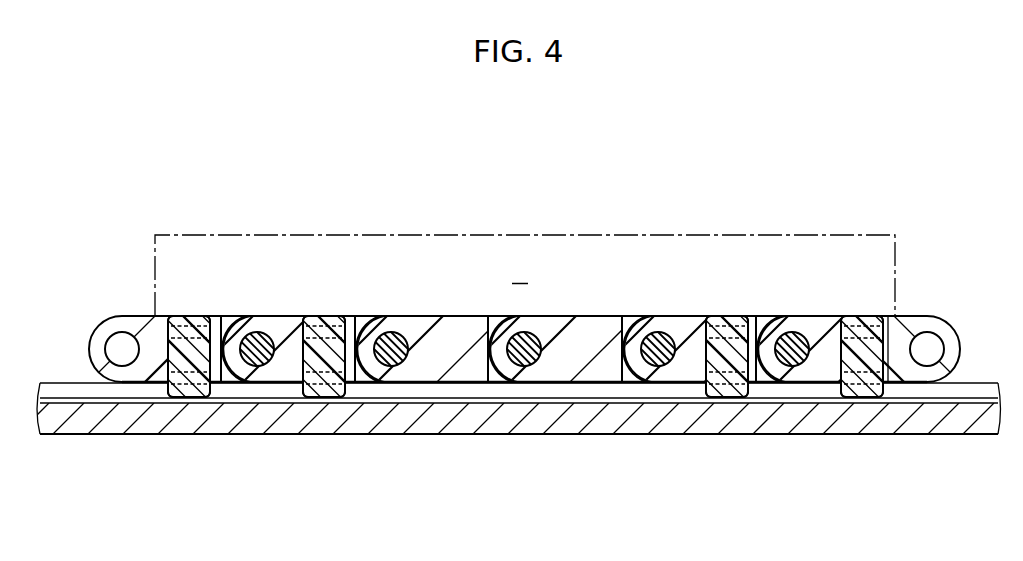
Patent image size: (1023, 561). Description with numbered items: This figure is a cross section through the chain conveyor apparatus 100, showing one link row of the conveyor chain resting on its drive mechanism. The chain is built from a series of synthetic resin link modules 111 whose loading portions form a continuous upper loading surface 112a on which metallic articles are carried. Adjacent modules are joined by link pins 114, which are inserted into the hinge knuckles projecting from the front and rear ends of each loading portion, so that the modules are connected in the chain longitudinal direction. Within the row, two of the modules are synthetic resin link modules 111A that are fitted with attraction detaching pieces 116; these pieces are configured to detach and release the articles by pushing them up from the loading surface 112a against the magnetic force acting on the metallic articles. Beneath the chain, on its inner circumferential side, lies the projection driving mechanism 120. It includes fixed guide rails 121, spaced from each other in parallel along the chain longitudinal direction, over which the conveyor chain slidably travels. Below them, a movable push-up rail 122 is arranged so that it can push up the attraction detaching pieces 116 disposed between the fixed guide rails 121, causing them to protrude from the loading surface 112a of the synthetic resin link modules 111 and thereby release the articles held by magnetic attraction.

The chain conveyor apparatus 100 is at (912, 172).
The synthetic resin link module 111 is at (457, 372).
The synthetic resin link module having attraction detaching piece 111A is at (145, 380).
The loading surface 112a is at (838, 315).
The link pin 114 is at (257, 366).
The attraction detaching piece 116 is at (190, 392).
The projection driving mechanism 120 is at (125, 491).
The fixed guide rail 121 is at (112, 392).
The movable push-up rail 122 is at (66, 410).